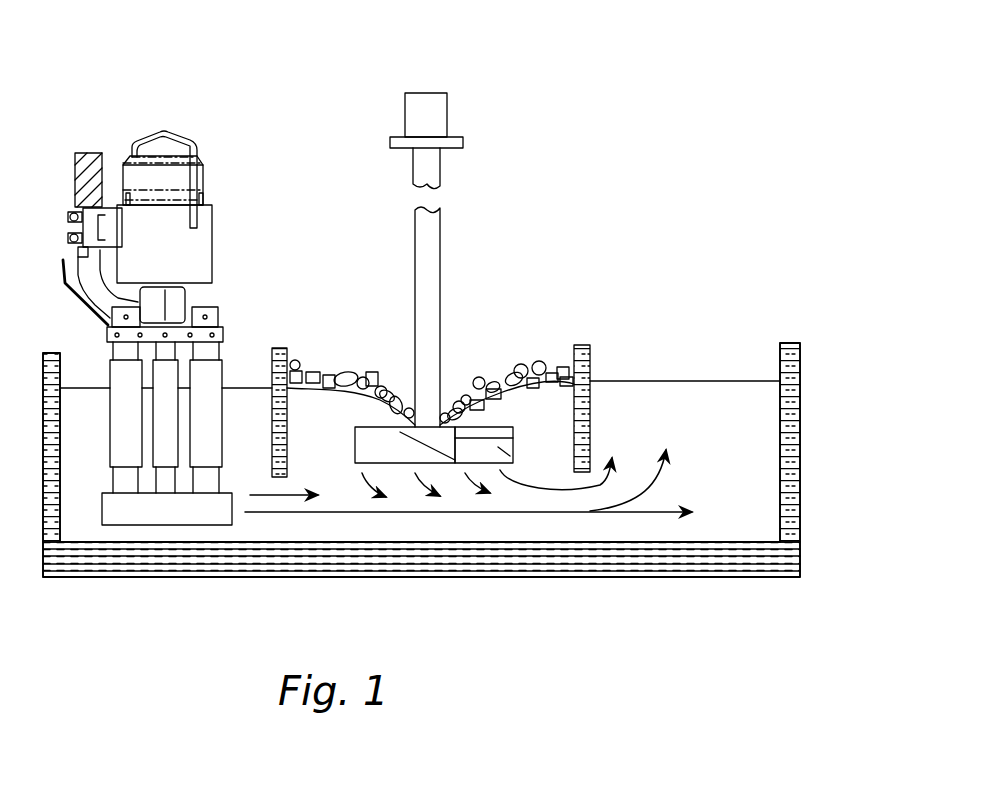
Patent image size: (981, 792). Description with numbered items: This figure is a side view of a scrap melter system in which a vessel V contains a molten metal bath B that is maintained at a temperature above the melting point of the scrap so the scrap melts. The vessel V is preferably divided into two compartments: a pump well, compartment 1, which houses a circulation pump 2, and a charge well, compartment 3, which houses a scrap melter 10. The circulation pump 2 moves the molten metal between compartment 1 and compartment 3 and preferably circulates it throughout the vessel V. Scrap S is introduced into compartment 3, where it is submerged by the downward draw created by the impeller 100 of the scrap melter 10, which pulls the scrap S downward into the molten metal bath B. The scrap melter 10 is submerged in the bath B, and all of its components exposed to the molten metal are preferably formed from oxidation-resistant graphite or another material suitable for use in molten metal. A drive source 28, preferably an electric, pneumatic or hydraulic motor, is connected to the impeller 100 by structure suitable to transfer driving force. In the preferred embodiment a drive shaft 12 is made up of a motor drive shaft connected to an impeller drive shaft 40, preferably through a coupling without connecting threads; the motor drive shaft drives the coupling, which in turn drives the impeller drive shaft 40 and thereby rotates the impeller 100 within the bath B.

The compartment 1 is at (252, 337).
The circulation pump 2 is at (173, 107).
The compartment 3 is at (448, 334).
The scrap melter 10 is at (522, 262).
The drive shaft 12 is at (440, 166).
The drive source 28 is at (447, 108).
The impeller drive shaft 40 is at (415, 287).
The impeller 100 is at (462, 440).
The scrap S is at (330, 378).
The molten metal bath B is at (92, 448).
The vessel V is at (803, 412).